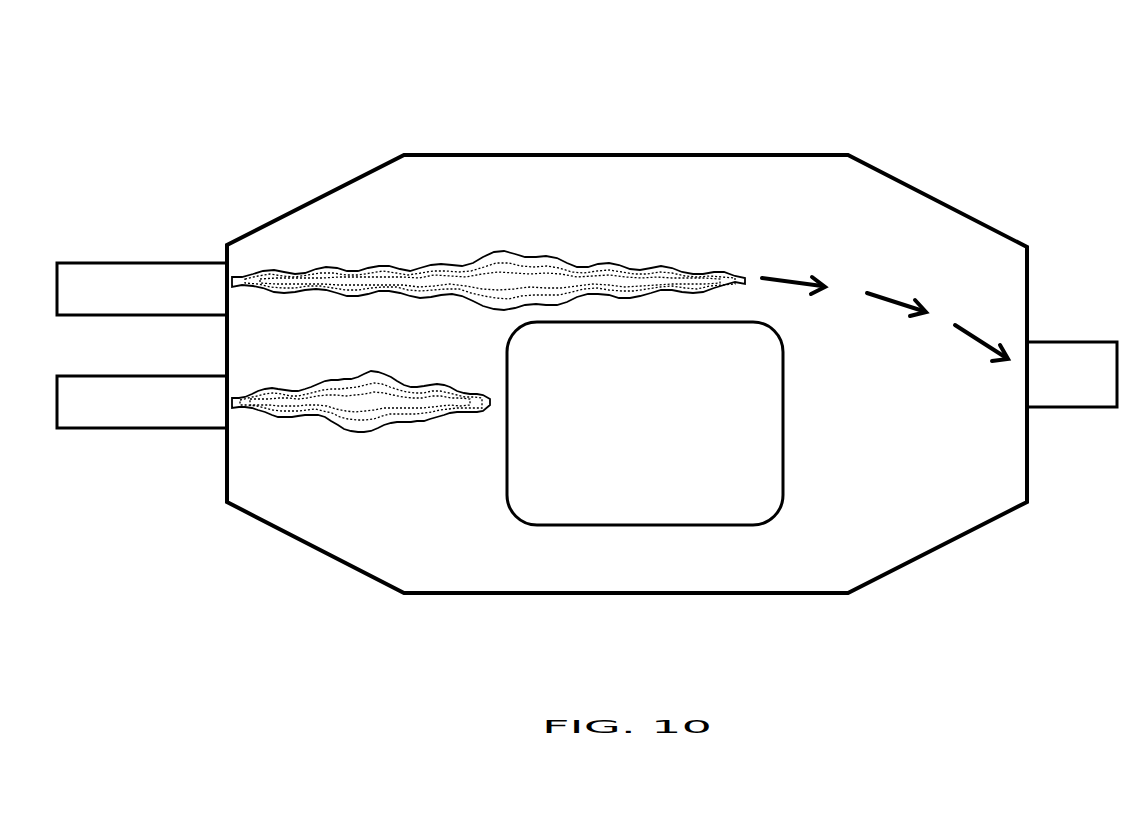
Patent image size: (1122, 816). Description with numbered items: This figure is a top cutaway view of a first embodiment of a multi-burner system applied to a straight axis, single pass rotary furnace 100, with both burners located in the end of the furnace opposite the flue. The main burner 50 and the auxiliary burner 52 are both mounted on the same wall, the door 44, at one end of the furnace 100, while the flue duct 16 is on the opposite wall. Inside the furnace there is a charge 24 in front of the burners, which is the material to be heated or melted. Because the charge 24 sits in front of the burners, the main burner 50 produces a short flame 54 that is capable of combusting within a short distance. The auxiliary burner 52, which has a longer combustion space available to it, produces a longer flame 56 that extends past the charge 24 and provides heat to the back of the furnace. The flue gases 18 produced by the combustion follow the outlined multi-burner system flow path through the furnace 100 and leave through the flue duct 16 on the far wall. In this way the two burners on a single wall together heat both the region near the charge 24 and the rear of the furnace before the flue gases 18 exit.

The rotary furnace 100 is at (912, 120).
The auxiliary burner 52 is at (142, 289).
The main burner 50 is at (142, 402).
The door 44 is at (227, 350).
The flue duct 16 is at (1072, 374).
The charge 24 is at (645, 423).
The flue gases 18 is at (964, 338).
The longer flame 56 is at (456, 259).
The short flame 54 is at (348, 434).